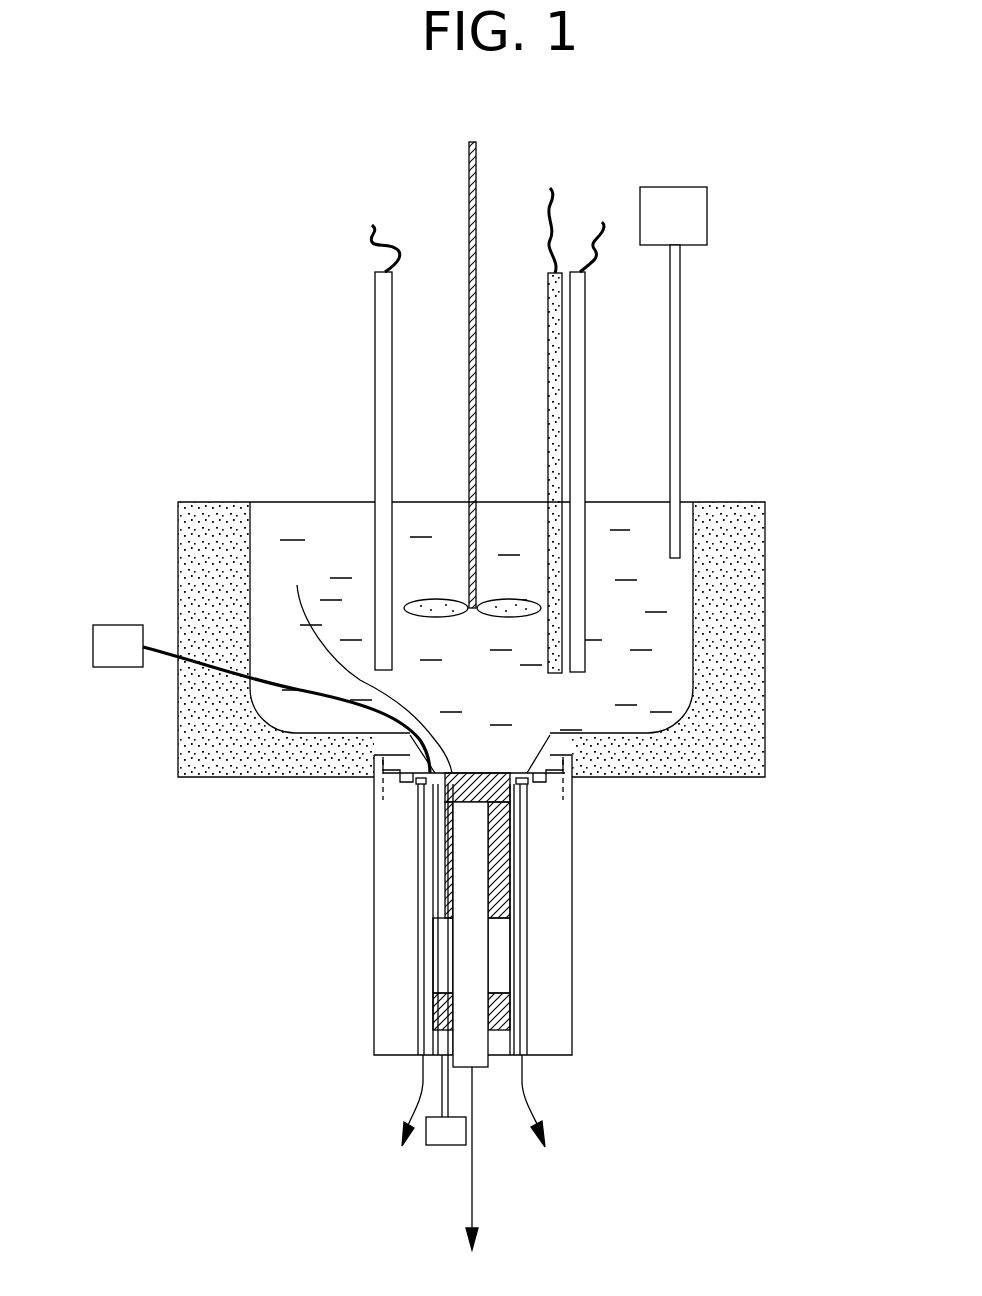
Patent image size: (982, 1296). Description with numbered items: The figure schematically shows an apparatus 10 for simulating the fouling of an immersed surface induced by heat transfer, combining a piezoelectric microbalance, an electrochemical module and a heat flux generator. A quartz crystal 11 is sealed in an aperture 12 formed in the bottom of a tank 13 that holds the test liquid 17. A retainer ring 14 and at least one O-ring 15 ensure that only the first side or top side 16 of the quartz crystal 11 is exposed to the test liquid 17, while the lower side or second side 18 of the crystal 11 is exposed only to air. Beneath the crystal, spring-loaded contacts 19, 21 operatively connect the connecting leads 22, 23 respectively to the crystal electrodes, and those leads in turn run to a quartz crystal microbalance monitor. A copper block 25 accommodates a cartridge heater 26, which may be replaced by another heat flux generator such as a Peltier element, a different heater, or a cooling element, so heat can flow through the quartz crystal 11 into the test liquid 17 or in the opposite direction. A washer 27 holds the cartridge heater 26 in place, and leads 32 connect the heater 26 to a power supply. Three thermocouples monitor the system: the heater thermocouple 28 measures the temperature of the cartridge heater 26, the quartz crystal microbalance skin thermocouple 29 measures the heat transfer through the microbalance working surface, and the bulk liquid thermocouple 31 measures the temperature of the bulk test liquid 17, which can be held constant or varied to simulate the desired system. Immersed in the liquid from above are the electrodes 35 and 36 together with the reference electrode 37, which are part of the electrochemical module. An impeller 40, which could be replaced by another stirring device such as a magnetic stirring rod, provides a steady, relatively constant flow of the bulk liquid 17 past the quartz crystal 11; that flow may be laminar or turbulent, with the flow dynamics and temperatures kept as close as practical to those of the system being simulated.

The apparatus 10 is at (785, 148).
The quartz crystal 11 is at (280, 540).
The aperture 12 is at (535, 757).
The tank 13 is at (747, 573).
The retainer ring 14 is at (585, 777).
The O-ring 15 is at (547, 785).
The first side or top side 16 is at (487, 757).
The test liquid 17 is at (677, 660).
The lower side or second side 18 is at (430, 808).
The spring-loaded contact 19 is at (423, 812).
The spring-loaded contact 21 is at (525, 815).
The connecting lead 22 is at (423, 1083).
The connecting lead 23 is at (545, 1137).
The copper block 25 is at (503, 893).
The cartridge heater 26 is at (503, 953).
The washer 27 is at (503, 1027).
The heater thermocouple 28 is at (440, 1145).
The quartz crystal microbalance skin thermocouple 29 is at (120, 625).
The bulk liquid thermocouple 31 is at (681, 398).
The leads 32 is at (473, 1213).
The electrode 35 is at (373, 325).
The electrode 36 is at (586, 372).
The reference electrode 37 is at (550, 243).
The impeller 40 is at (469, 144).